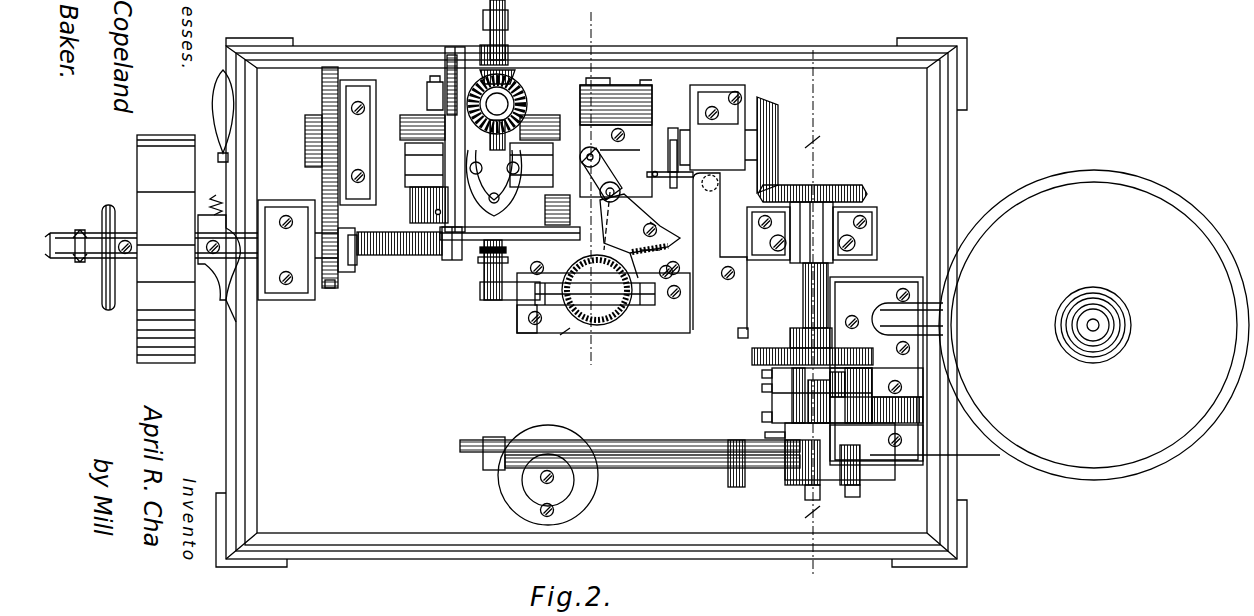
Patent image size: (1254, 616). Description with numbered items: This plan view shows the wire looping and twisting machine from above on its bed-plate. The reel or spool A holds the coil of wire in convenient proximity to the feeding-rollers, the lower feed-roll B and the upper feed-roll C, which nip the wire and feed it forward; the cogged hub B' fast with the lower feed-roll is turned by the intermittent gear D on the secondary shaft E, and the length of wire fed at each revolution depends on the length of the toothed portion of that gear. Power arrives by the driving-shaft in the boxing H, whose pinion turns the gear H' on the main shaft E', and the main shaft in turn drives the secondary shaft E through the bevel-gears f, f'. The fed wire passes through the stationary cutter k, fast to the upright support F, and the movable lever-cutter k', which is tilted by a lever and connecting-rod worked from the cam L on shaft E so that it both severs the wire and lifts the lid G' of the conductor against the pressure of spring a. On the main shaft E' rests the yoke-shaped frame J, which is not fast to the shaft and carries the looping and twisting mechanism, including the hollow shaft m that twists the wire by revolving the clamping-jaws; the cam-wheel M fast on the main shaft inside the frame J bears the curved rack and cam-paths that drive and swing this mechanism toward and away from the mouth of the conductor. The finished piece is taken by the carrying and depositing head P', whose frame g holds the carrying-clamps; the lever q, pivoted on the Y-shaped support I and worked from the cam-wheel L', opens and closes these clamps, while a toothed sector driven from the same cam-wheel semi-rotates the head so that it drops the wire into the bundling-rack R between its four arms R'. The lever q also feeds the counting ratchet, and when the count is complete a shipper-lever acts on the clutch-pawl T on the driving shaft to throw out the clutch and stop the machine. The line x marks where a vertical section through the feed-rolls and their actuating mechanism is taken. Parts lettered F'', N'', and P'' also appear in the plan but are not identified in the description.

The reel or spool A is at (1059, 325).
The lower feed-roll B is at (876, 371).
The cogged hub B' is at (166, 249).
The upper feed-roll C is at (822, 395).
The intermittent gear D is at (890, 472).
The secondary shaft E is at (812, 275).
The main shaft E' is at (678, 138).
The upright support frame F is at (876, 395).
The round plate F'' is at (548, 475).
The lid G' is at (630, 453).
The boxing H is at (253, 255).
The gear H' is at (336, 177).
The Y-shaped support I is at (636, 209).
The yoke-shaped frame J is at (490, 177).
The cam L is at (812, 344).
The cam-wheel L' is at (616, 137).
The cam-wheel M is at (450, 47).
The plate N'' is at (616, 115).
The carrying and depositing head P' is at (603, 301).
The plate P'' is at (512, 319).
The bundling-rack R is at (720, 251).
The arms R' is at (700, 269).
The clutch-pawl T is at (220, 262).
The spring a is at (730, 440).
The bevel-gear f is at (770, 145).
The bevel-gear f' is at (812, 180).
The frame of carrying-head g is at (666, 264).
The stationary cutter k is at (775, 444).
The movable lever-cutter k' is at (748, 377).
The hollow shaft m is at (520, 112).
The lever q is at (658, 212).
The section line x is at (812, 331).